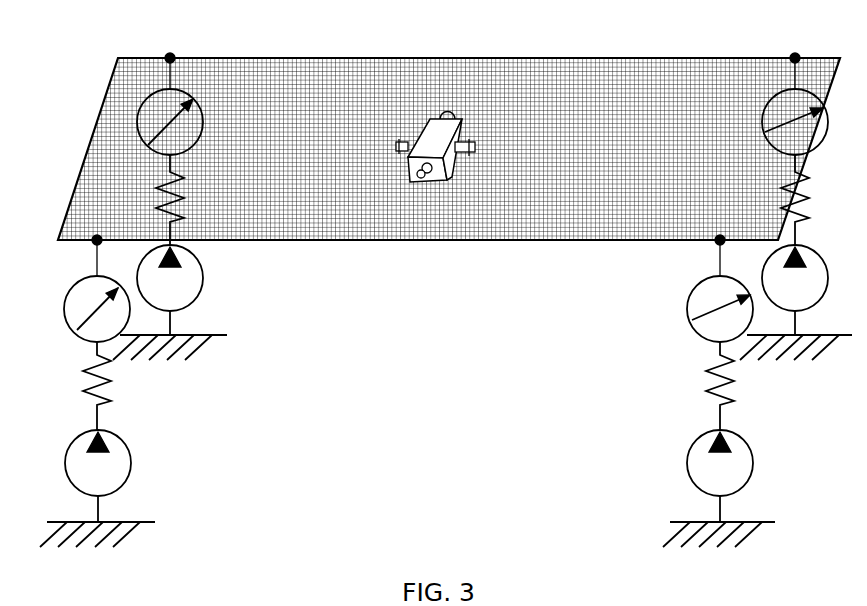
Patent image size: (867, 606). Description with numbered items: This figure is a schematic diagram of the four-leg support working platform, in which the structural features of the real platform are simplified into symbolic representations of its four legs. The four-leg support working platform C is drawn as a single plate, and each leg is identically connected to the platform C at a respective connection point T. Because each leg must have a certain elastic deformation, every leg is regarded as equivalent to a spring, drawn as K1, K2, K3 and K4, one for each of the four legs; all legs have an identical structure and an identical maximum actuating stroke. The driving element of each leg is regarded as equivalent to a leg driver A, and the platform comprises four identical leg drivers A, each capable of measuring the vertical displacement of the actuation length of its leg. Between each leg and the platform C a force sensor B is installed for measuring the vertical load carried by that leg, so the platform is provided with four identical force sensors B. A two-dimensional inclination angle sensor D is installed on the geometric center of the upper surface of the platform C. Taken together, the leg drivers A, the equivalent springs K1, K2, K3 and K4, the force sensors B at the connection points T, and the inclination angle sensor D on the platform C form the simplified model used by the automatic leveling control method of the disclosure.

The leg driver A is at (67, 447).
The force sensor B is at (67, 295).
The four-leg support working platform C is at (300, 138).
The two-dimensional inclination angle sensor D is at (440, 143).
The connection point T is at (170, 56).
The equivalent spring of first leg K1 is at (119, 386).
The equivalent spring of second leg K2 is at (741, 386).
The equivalent spring of third leg K3 is at (817, 200).
The equivalent spring of fourth leg K4 is at (193, 200).